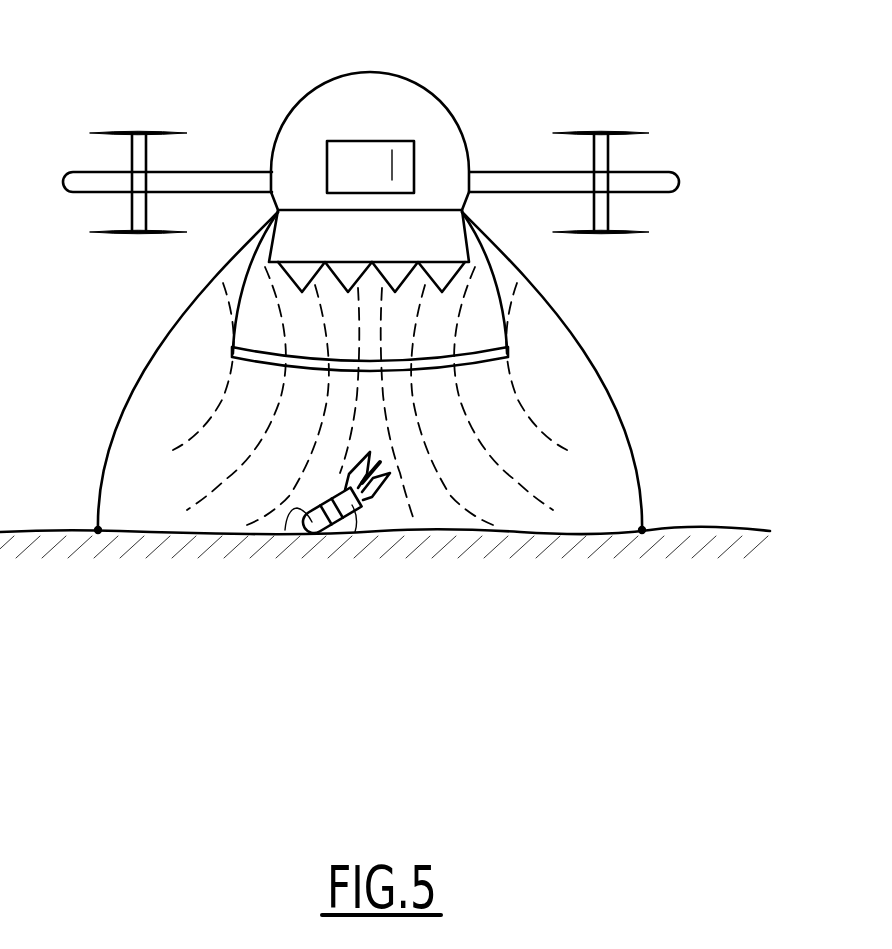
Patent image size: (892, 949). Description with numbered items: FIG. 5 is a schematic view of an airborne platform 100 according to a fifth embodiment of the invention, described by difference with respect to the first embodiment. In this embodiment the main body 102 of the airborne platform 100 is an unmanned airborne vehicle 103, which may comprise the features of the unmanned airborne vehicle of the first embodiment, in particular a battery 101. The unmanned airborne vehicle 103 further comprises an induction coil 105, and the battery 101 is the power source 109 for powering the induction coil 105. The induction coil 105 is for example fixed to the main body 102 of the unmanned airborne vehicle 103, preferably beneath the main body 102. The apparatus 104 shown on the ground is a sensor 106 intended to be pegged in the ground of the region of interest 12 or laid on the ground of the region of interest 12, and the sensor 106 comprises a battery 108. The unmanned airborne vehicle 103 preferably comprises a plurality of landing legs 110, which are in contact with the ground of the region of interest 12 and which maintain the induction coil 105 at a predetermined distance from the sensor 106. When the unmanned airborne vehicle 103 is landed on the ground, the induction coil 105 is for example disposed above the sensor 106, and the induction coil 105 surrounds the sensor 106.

The region of interest 12 is at (743, 562).
The airborne platform 100 is at (371, 147).
The battery 101 is at (393, 173).
The main body 102 is at (452, 143).
The unmanned airborne vehicle 103 is at (270, 128).
The apparatus 104 is at (353, 502).
The induction coil 105 is at (510, 348).
The sensor 106 is at (285, 530).
The battery 108 is at (355, 532).
The power source 109 is at (355, 160).
The landing legs 110 is at (113, 430).